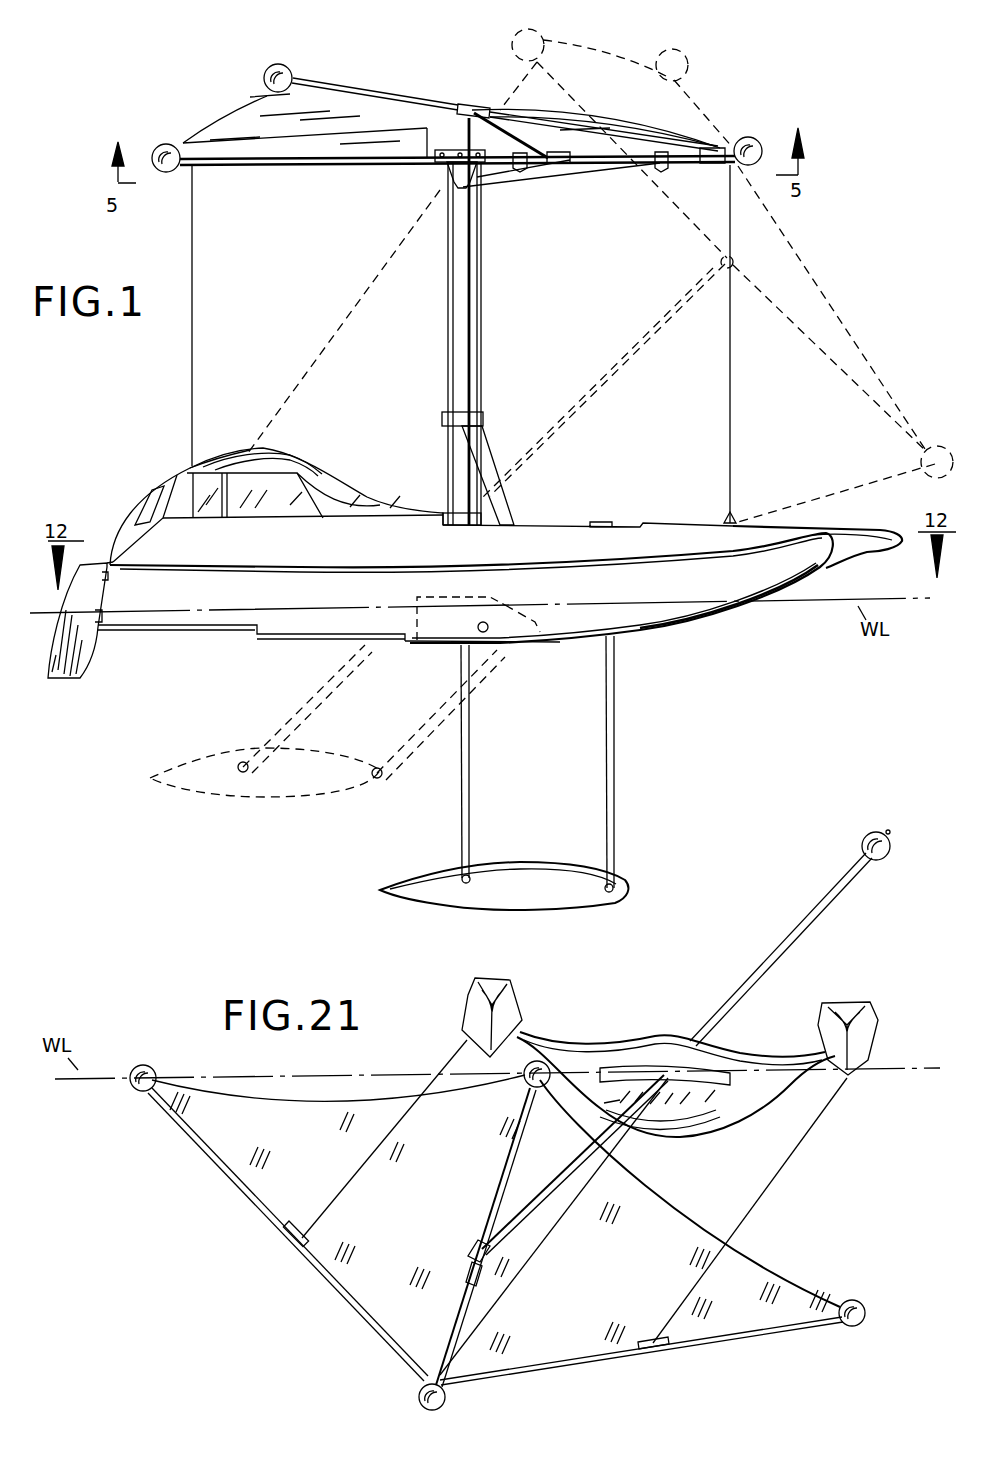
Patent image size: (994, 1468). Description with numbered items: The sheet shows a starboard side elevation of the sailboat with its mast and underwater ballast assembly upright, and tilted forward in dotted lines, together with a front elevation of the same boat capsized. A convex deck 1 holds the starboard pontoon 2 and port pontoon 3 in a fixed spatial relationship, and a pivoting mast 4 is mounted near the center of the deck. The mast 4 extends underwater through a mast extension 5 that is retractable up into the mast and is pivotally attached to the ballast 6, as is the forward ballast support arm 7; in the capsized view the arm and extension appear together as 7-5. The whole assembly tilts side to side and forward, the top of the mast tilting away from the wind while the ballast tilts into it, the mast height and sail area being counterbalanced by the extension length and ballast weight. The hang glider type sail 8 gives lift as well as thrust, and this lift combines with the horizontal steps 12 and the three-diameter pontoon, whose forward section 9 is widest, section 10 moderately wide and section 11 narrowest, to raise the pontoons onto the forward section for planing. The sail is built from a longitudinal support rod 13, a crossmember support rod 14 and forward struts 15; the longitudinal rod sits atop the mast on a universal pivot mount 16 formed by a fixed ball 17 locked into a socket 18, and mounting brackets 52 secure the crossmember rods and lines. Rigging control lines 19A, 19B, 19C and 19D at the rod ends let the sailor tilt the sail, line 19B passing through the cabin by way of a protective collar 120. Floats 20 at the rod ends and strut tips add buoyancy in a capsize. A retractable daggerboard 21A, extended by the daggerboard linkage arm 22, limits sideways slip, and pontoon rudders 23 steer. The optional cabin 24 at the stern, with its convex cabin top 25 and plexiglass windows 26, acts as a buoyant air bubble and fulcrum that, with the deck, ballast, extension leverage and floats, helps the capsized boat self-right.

In FIG. 1, the convex deck 1 is at (868, 550).
In FIG. 21, the convex deck 1 is at (648, 1036).
In FIG. 1, the starboard pontoon 2 is at (766, 582).
In FIG. 21, the starboard pontoon 2 is at (870, 1012).
In FIG. 21, the port pontoon 3 is at (470, 985).
In FIG. 1, the pivoting mast 4 is at (448, 282).
In FIG. 21, the pivoting mast 4 is at (563, 1166).
In FIG. 1, the mast extension 5 is at (471, 770).
In FIG. 1, the ballast 6 is at (516, 895).
In FIG. 21, the ballast 6 is at (862, 838).
In FIG. 1, the forward ballast support arm 7 is at (616, 768).
In FIG. 21, the forward ballast support arm and mast extension 7-5 is at (810, 923).
In FIG. 1, the hang glider type sail 8 is at (248, 112).
In FIG. 1, the forward section 9 is at (555, 643).
In FIG. 1, the moderately wide section 10 is at (277, 640).
In FIG. 1, the narrowest section 11 is at (167, 630).
In FIG. 1, the horizontal steps 12 is at (630, 638).
In FIG. 1, the longitudinal support rod 13 is at (311, 167).
In FIG. 21, the longitudinal support rod 13 is at (496, 1182).
In FIG. 1, the crossmember support rod 14 is at (522, 141).
In FIG. 1, the forward struts 15 is at (383, 96).
In FIG. 1, the universal pivot mount 16 is at (432, 170).
In FIG. 1, the fixed ball 17 is at (452, 184).
In FIG. 1, the socket 18 is at (480, 174).
In FIG. 1, the rigging control line 19A is at (734, 386).
In FIG. 21, the rigging control line 19A is at (538, 1250).
In FIG. 1, the rigging control line 19B is at (190, 375).
In FIG. 21, the rigging control line 19B is at (566, 1097).
In FIG. 21, the rigging control line 19C is at (352, 1162).
In FIG. 1, the rigging control line 19D is at (472, 272).
In FIG. 21, the rigging control line 19D is at (808, 1152).
In FIG. 1, the floats 20 is at (285, 65).
In FIG. 21, the floats 20 is at (136, 1066).
In FIG. 1, the retractable daggerboard 21A is at (498, 602).
In FIG. 1, the daggerboard linkage arm 22 is at (484, 440).
In FIG. 1, the pontoon rudders 23 is at (80, 677).
In FIG. 1, the cabin 24 is at (400, 510).
In FIG. 21, the cabin 24 is at (730, 1121).
In FIG. 1, the cabin top 25 is at (275, 455).
In FIG. 1, the plexiglass windows 26 is at (340, 490).
In FIG. 1, the mounting brackets 52 is at (468, 104).
In FIG. 1, the protective collar 120 is at (222, 462).